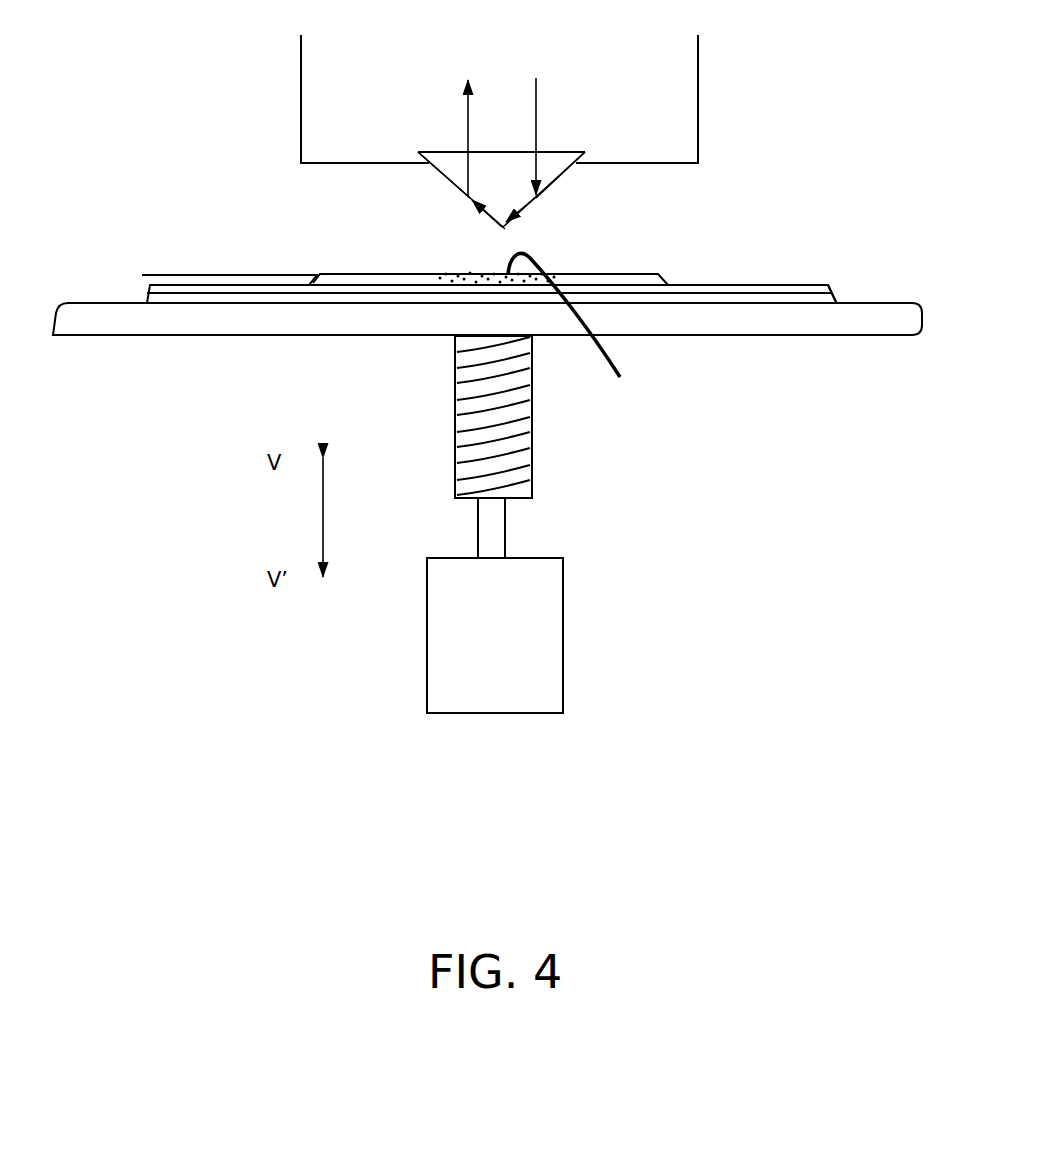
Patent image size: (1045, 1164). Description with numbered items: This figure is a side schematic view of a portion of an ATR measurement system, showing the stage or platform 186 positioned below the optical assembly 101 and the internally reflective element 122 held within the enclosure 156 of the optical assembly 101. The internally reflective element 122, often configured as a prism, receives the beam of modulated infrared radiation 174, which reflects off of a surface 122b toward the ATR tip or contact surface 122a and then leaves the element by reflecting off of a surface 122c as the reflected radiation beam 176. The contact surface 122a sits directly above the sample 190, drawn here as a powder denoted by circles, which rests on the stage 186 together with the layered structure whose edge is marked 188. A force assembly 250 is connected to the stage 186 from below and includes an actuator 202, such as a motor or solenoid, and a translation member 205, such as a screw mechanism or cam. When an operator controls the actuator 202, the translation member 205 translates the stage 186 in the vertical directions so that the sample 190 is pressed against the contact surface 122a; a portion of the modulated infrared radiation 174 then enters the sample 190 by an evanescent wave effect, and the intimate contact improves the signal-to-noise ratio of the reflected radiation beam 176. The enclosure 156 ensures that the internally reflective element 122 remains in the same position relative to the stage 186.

The optical assembly 101 is at (255, 140).
The enclosure 156 is at (698, 105).
The modulated infrared radiation beam 174 is at (537, 123).
The reflected radiation beam 176 is at (468, 128).
The internally reflective element 122 is at (564, 173).
The contact surface 122a is at (502, 228).
The surface 122b is at (532, 208).
The surface 122c is at (448, 187).
The stage 186 is at (733, 285).
The layer edge 188 is at (830, 291).
The sample 190 is at (584, 331).
The translation member 205 is at (534, 436).
The actuator 202 is at (527, 667).
The force assembly 250 is at (670, 560).